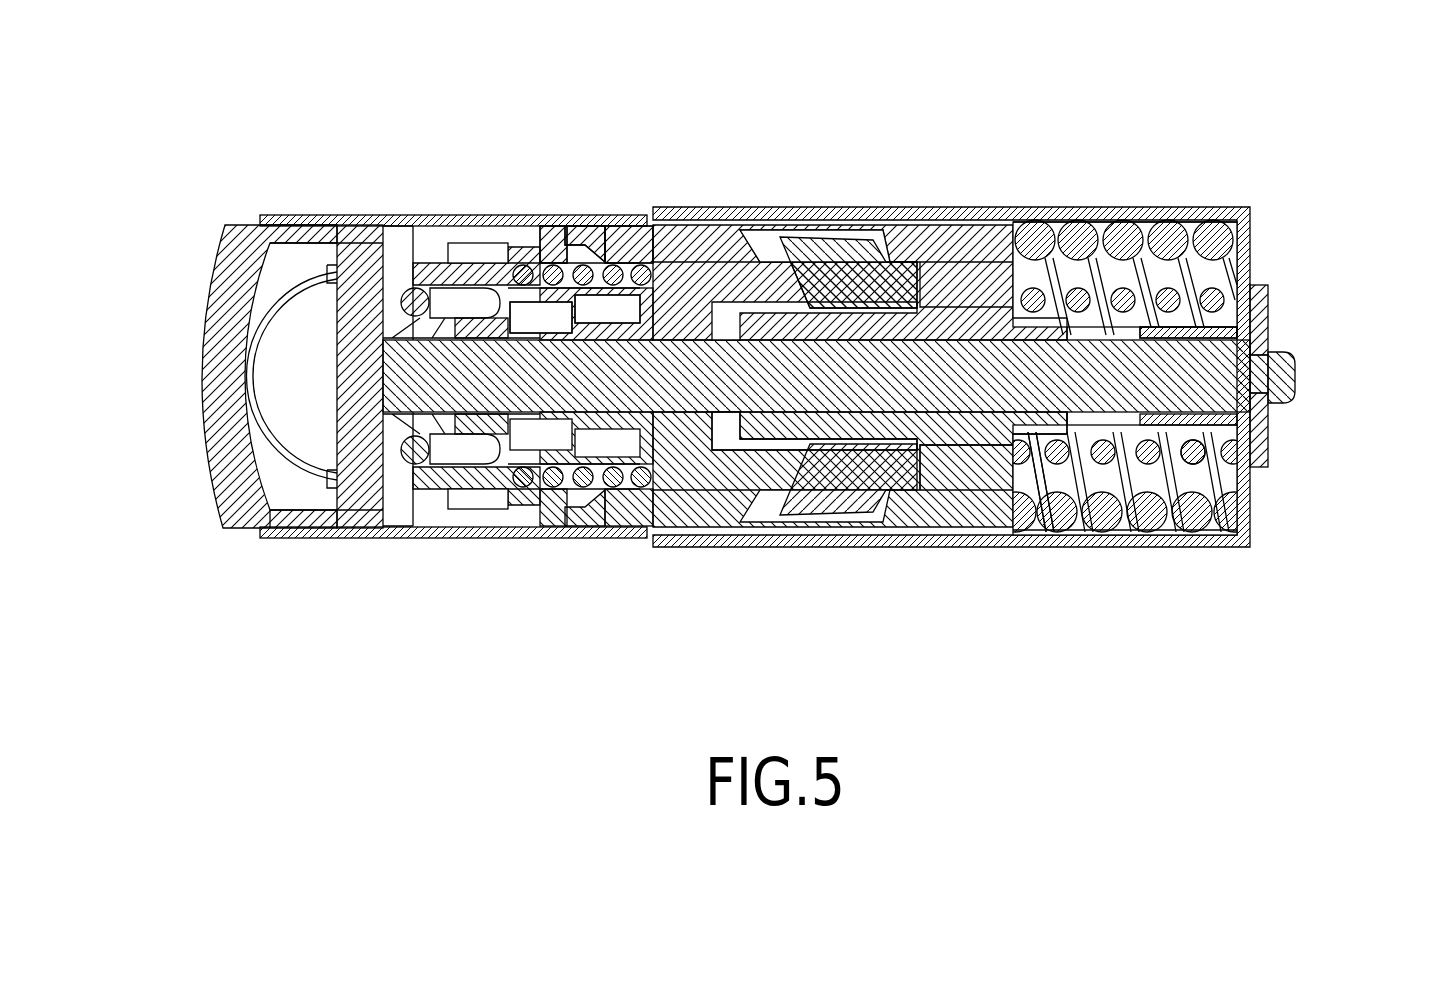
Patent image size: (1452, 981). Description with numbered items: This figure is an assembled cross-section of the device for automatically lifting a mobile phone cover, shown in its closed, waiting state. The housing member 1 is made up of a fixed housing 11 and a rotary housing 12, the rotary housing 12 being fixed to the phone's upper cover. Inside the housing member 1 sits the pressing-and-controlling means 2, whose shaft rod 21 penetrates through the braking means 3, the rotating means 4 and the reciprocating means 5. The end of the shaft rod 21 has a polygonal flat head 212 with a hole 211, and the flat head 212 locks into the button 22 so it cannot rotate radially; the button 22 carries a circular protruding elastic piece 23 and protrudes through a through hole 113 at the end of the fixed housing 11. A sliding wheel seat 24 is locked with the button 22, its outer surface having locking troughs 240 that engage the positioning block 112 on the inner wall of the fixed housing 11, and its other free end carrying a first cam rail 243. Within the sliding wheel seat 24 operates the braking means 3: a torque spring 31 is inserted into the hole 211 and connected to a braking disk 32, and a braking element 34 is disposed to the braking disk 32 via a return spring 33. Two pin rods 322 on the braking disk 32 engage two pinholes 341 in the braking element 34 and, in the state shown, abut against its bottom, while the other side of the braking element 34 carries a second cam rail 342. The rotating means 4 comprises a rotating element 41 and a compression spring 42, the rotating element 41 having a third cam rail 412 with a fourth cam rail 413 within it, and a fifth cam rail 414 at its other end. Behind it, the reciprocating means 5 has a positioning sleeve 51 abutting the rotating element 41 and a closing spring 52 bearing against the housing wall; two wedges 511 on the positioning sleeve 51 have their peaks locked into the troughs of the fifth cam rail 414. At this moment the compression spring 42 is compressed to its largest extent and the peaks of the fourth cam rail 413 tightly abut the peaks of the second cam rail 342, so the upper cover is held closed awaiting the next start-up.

The housing member 1 is at (1233, 197).
The pressing-and-controlling means 2 is at (313, 257).
The braking means 3 is at (565, 458).
The rotating means 4 is at (1050, 217).
The reciprocating means 5 is at (1093, 512).
The fixed housing 11 is at (470, 540).
The rotary housing 12 is at (1248, 220).
The shaft rod 21 is at (1267, 410).
The button 22 is at (218, 297).
The elastic piece 23 is at (248, 400).
The sliding wheel seat 24 is at (670, 512).
The torque spring 31 is at (413, 270).
The braking disk 32 is at (435, 270).
The return spring 33 is at (737, 262).
The braking element 34 is at (680, 470).
The rotating element 41 is at (932, 230).
The compression spring 42 is at (1087, 230).
The positioning sleeve 51 is at (1048, 462).
The closing spring 52 is at (1208, 467).
The positioning block 112 is at (582, 237).
The through hole 113 is at (233, 482).
The hole 211 is at (343, 535).
The flat head 212 is at (357, 228).
The locking troughs 240 is at (628, 222).
The first cam rail 243 is at (773, 505).
The pin rods 322 is at (533, 226).
The pinholes 341 is at (610, 453).
The second cam rail 342 is at (833, 260).
The fourth cam rail 413 is at (828, 269).
The third cam rail 412 is at (840, 508).
The fifth cam rail 414 is at (935, 490).
The wedges 511 is at (975, 520).